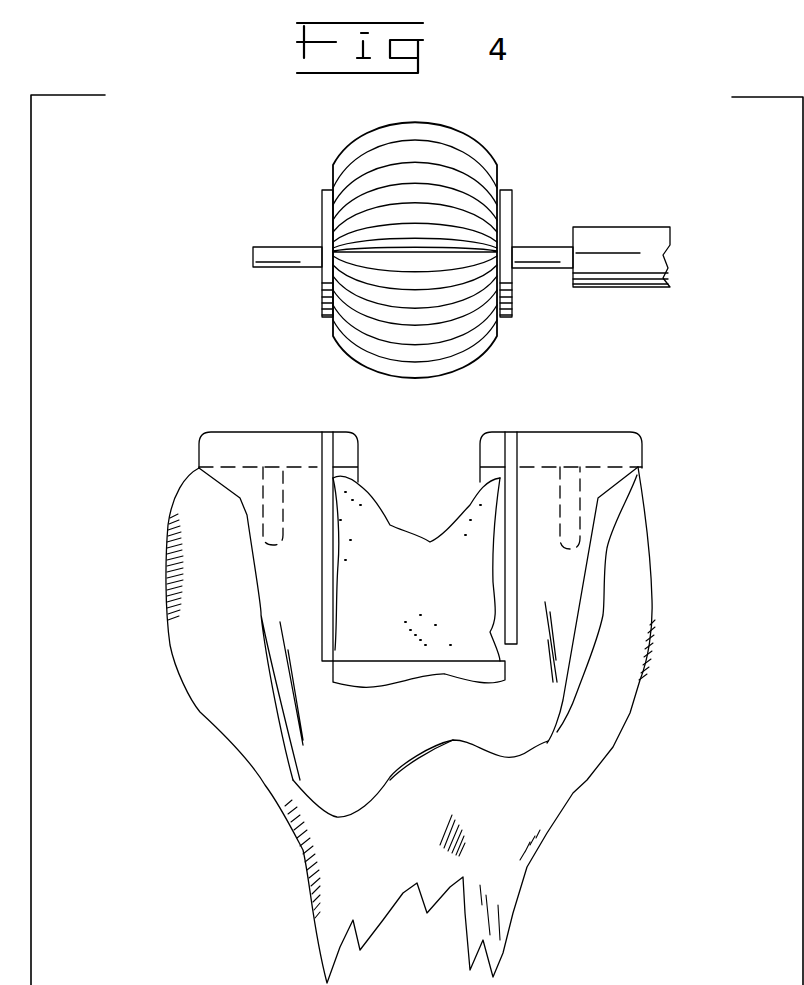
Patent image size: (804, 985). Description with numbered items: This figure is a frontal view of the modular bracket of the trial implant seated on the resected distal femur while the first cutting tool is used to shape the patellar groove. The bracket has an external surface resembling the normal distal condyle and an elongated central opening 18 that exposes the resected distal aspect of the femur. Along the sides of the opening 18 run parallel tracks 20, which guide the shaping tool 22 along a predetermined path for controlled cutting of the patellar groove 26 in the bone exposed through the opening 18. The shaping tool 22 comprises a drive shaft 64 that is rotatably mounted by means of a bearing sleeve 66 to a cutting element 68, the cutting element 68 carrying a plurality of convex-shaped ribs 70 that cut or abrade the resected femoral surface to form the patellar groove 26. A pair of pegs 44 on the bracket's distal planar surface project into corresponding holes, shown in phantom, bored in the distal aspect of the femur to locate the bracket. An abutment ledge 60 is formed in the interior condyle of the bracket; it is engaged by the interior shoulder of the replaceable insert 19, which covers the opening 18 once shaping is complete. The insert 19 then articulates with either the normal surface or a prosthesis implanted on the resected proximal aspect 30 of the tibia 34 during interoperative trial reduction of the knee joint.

The coil windings 70 is at (373, 168).
The cutting element 68 is at (483, 141).
The shaping tool 22 is at (518, 186).
The bearing sleeve 66 is at (328, 208).
The drive shaft 64 is at (283, 265).
The tibia 34 is at (477, 467).
The pegs 44 is at (262, 506).
The elongated central opening 18 is at (398, 631).
The patellar groove 26 is at (372, 536).
The parallel tracks 20 is at (511, 575).
The proximal aspect of the tibia 30 is at (522, 740).
The abutment ledge 60 is at (483, 672).
The replaceable insert 19 is at (323, 780).